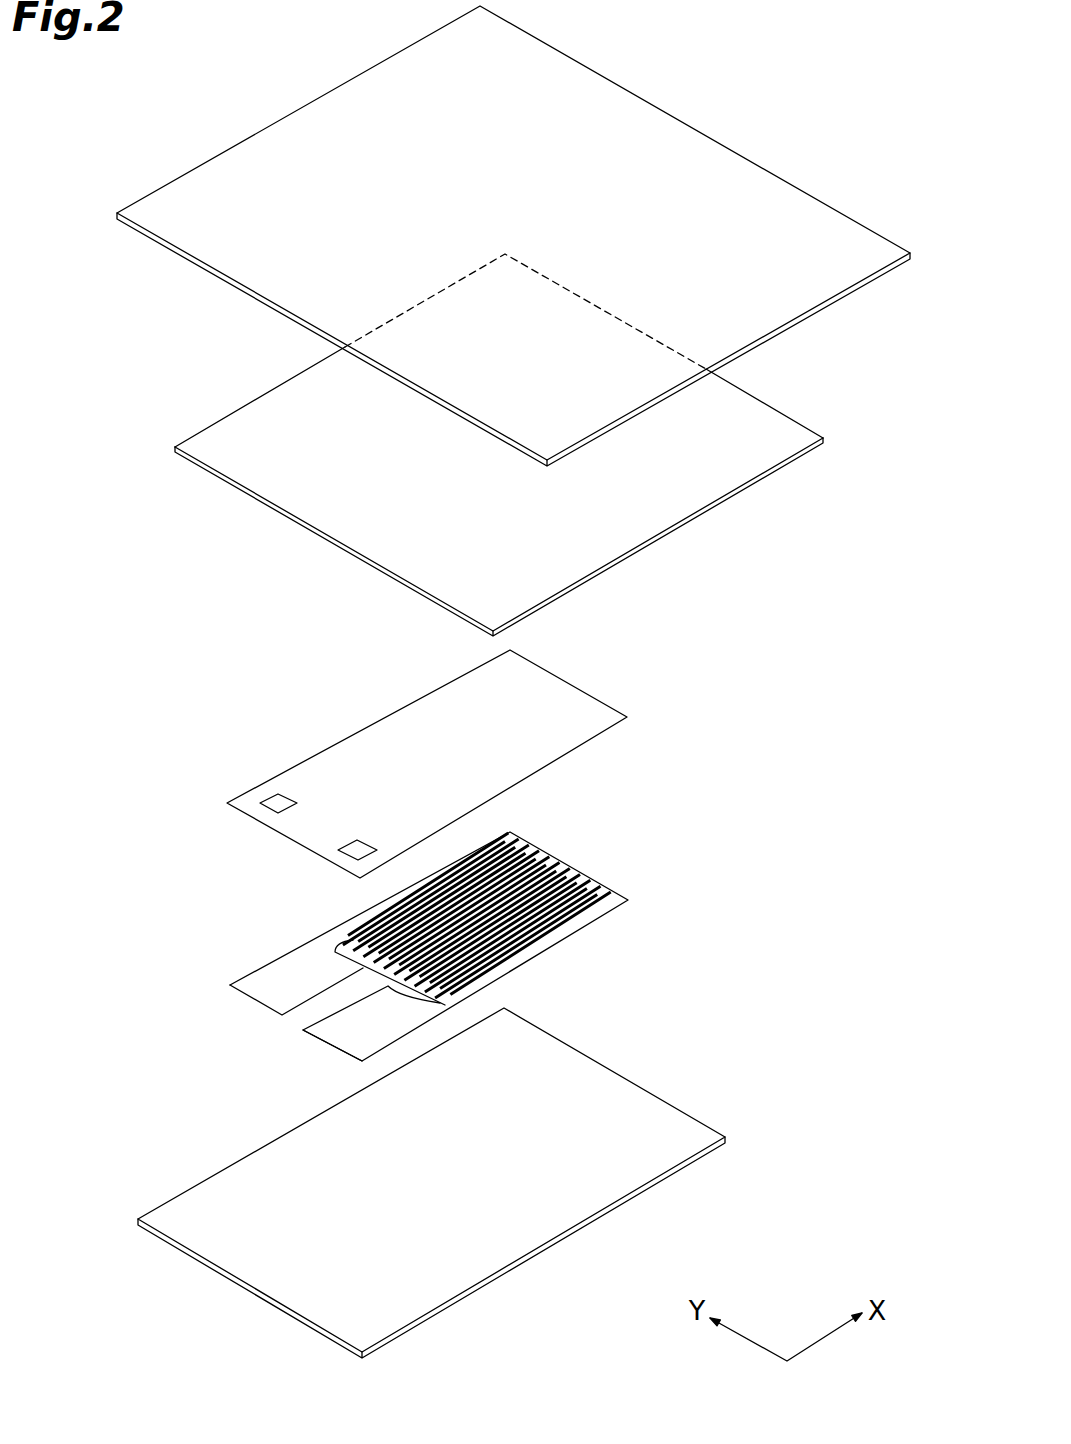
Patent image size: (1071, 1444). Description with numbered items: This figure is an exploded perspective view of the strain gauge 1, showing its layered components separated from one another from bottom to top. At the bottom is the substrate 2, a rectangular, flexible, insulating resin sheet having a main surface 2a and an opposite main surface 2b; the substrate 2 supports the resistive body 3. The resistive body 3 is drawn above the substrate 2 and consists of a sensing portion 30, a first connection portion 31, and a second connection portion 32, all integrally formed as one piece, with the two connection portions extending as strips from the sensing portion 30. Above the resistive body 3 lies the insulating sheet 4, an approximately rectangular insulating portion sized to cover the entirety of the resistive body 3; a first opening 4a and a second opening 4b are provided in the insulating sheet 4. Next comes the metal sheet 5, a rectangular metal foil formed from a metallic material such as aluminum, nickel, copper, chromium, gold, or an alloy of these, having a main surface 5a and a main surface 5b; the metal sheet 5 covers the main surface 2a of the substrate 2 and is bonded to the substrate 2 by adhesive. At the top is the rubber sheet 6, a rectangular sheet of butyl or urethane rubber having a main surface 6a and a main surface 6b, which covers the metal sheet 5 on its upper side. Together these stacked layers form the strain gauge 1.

The strain gauge 1 is at (840, 65).
The substrate 2 is at (651, 1110).
The main surface 2a is at (582, 1086).
The main surface 2b is at (571, 1188).
The resistive body 3 is at (416, 935).
The sensing portion 30 is at (567, 925).
The first connection portion 31 is at (275, 993).
The second connection portion 32 is at (347, 1035).
The insulating sheet 4 is at (563, 670).
The first opening 4a is at (276, 803).
The second opening 4b is at (352, 852).
The metal sheet 5 is at (773, 430).
The main surface 5a is at (727, 467).
The main surface 5b is at (657, 500).
The rubber sheet 6 is at (770, 200).
The main surface 6a is at (653, 132).
The main surface 6b is at (280, 275).